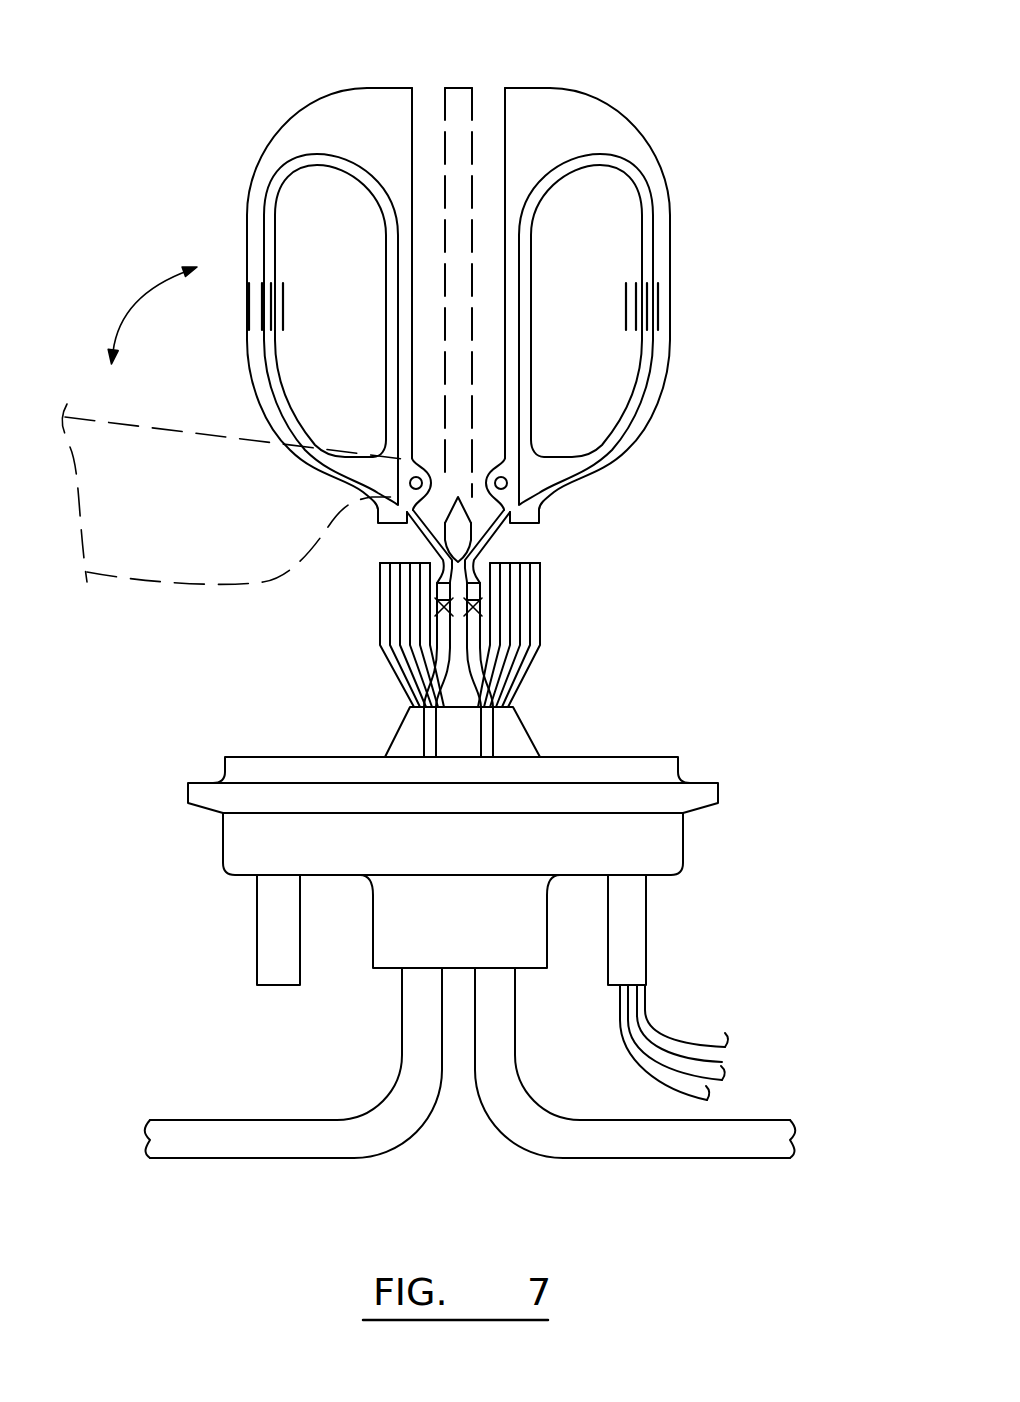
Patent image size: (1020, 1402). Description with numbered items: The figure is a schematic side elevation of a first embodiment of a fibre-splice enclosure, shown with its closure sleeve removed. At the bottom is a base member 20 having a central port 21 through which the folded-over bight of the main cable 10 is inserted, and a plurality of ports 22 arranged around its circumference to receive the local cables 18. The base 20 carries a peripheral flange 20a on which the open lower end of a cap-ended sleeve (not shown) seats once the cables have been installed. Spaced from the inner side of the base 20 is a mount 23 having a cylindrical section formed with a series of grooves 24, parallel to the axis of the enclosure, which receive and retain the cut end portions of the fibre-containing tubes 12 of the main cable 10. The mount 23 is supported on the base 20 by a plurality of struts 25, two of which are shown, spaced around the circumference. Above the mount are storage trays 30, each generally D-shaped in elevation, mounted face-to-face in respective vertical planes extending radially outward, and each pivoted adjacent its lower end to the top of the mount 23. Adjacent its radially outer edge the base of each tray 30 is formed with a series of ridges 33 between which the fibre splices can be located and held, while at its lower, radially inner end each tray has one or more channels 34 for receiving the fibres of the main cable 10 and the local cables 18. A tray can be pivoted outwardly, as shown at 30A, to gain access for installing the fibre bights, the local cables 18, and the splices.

The main cable 10 is at (517, 1118).
The fibre-containing tubes 12 is at (488, 743).
The local cables 18 is at (700, 1050).
The base member 20 is at (660, 848).
The peripheral flange 20a is at (712, 782).
The central port 21 is at (398, 943).
The ports 22 is at (278, 937).
The mount 23 is at (548, 647).
The grooves 24 is at (520, 595).
The struts 25 is at (527, 723).
The storage trays 30 is at (348, 133).
The outwardly pivoted tray position 30A is at (183, 533).
The ridges 33 is at (636, 300).
The channels 34 is at (537, 512).